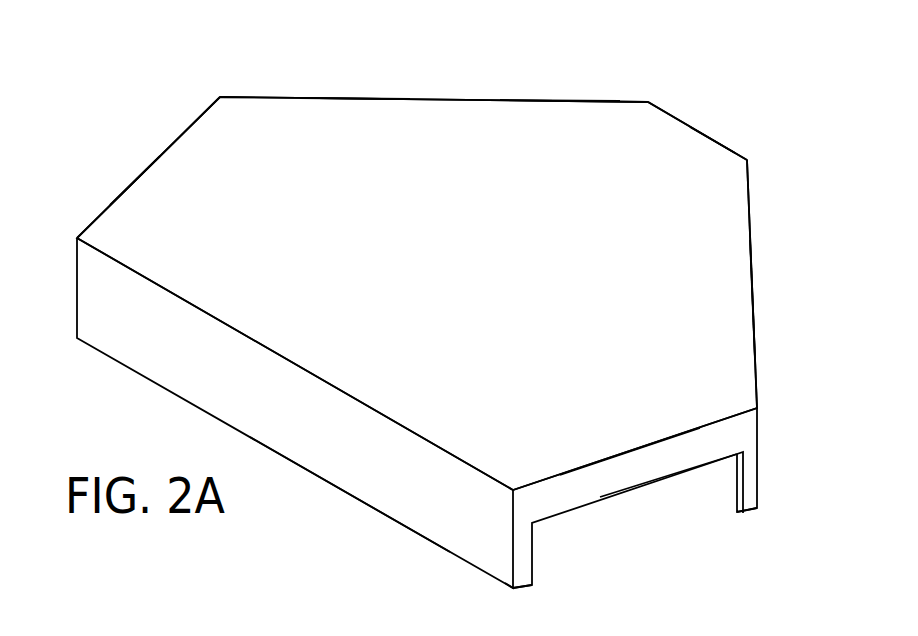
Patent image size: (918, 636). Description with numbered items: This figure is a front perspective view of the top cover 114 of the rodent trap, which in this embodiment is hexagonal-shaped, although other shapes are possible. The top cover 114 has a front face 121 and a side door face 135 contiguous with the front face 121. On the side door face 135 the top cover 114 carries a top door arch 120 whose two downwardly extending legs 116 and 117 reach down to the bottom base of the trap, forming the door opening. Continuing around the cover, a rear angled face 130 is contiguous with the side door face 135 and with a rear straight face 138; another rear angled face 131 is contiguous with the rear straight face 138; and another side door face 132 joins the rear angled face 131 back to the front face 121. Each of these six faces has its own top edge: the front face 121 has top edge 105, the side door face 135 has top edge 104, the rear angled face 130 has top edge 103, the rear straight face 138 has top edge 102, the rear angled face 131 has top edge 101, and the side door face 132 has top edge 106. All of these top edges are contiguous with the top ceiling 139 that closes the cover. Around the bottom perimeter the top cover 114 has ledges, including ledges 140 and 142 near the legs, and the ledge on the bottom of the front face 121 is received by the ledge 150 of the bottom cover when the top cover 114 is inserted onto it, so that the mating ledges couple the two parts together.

The top edge 101 is at (293, 96).
The top edge 102 is at (667, 112).
The top edge 103 is at (752, 225).
The top edge 104 is at (628, 451).
The top edge 105 is at (197, 307).
The top edge 106 is at (173, 141).
The top cover 114 is at (558, 99).
The downwardly extending leg 116 is at (522, 542).
The downwardly extending leg 117 is at (750, 484).
The top door arch 120 is at (618, 474).
The front face 121 is at (292, 422).
The rear angled face 130 is at (758, 297).
The rear angled face 131 is at (354, 97).
The side door face 132 is at (102, 208).
The side door face 135 is at (733, 433).
The rear straight face 138 is at (716, 140).
The top ceiling 139 is at (453, 267).
The ledge 140 is at (515, 589).
The ledge 142 is at (752, 512).
The ledge 150 is at (352, 499).